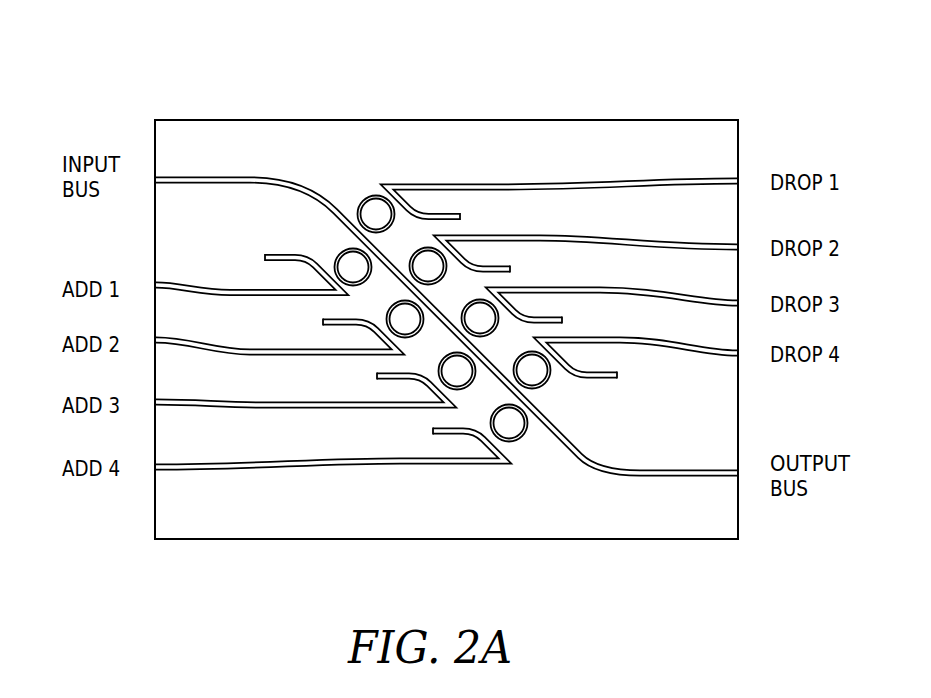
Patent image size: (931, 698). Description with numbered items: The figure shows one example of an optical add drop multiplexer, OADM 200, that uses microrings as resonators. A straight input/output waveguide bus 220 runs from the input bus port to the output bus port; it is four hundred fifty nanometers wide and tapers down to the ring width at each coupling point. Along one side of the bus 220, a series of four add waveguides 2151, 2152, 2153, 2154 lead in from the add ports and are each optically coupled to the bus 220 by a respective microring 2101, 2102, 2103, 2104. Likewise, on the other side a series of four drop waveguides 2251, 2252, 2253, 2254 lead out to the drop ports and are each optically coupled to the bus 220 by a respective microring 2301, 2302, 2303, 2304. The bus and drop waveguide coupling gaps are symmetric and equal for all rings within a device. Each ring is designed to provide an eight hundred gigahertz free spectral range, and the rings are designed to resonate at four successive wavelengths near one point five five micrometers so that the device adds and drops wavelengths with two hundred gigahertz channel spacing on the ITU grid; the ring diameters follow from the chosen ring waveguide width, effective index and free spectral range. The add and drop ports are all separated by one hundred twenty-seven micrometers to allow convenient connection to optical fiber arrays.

The optical add drop multiplexer (OADM) 200 is at (716, 62).
The input/output waveguide bus 220 is at (235, 176).
The add waveguide 2151 is at (207, 289).
The add waveguide 2152 is at (220, 347).
The add waveguide 2153 is at (240, 401).
The add waveguide 2154 is at (247, 461).
The drop waveguide 2251 is at (637, 181).
The drop waveguide 2252 is at (618, 237).
The drop waveguide 2253 is at (690, 299).
The drop waveguide 2254 is at (588, 379).
The microring 2101 is at (343, 252).
The microring 2102 is at (412, 338).
The microring 2103 is at (458, 391).
The microring 2104 is at (522, 437).
The microring 2301 is at (368, 195).
The microring 2302 is at (428, 247).
The microring 2303 is at (477, 299).
The microring 2304 is at (532, 351).